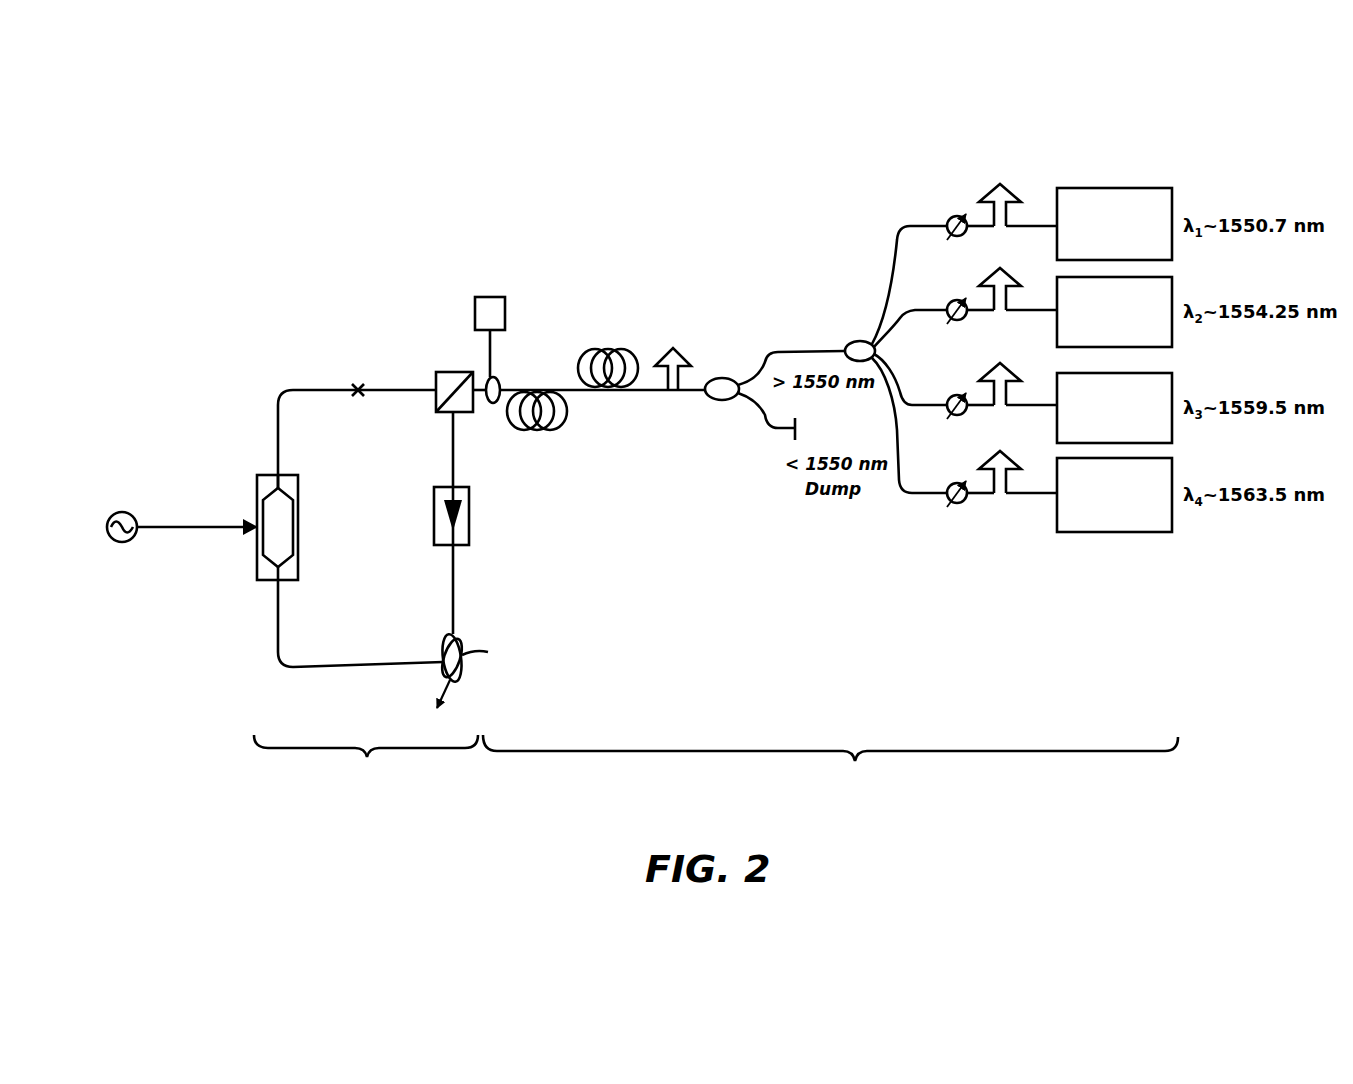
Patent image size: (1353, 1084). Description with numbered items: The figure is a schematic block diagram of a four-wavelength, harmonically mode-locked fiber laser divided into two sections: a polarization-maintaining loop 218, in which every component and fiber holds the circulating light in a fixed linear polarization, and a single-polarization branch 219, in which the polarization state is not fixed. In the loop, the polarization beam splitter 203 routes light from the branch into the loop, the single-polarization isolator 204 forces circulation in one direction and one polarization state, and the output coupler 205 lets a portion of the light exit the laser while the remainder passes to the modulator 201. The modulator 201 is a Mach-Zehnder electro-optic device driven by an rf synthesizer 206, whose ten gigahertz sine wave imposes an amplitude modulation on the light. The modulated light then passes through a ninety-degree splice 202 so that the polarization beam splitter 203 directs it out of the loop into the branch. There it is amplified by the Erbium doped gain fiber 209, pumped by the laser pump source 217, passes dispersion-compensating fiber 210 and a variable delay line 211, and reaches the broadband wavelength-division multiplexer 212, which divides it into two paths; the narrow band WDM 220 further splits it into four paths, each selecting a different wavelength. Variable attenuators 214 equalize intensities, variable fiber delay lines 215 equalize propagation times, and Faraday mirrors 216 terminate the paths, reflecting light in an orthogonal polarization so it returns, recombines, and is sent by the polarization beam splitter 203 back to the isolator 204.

The modulator 201 is at (298, 537).
The 90-degree splice 202 is at (386, 408).
The polarization beam splitter 203 is at (446, 372).
The single-polarization isolator 204 is at (470, 526).
The output coupler 205 is at (468, 680).
The rf synthesizer 206 is at (140, 498).
The Erbium doped gain fiber 209 is at (535, 432).
The dispersion-compensating fiber 210 is at (603, 347).
The variable delay line 211 is at (669, 399).
The broadband wavelength-division multiplexer 212 is at (715, 401).
The variable attenuator 214 is at (950, 211).
The variable fiber delay line 215 is at (1000, 506).
The Faraday mirror 216 is at (1114, 360).
The laser pump source 217 is at (489, 297).
The polarization-maintaining loop 218 is at (366, 765).
The single-polarization branch 219 is at (830, 766).
The narrow band WDM 220 is at (855, 341).